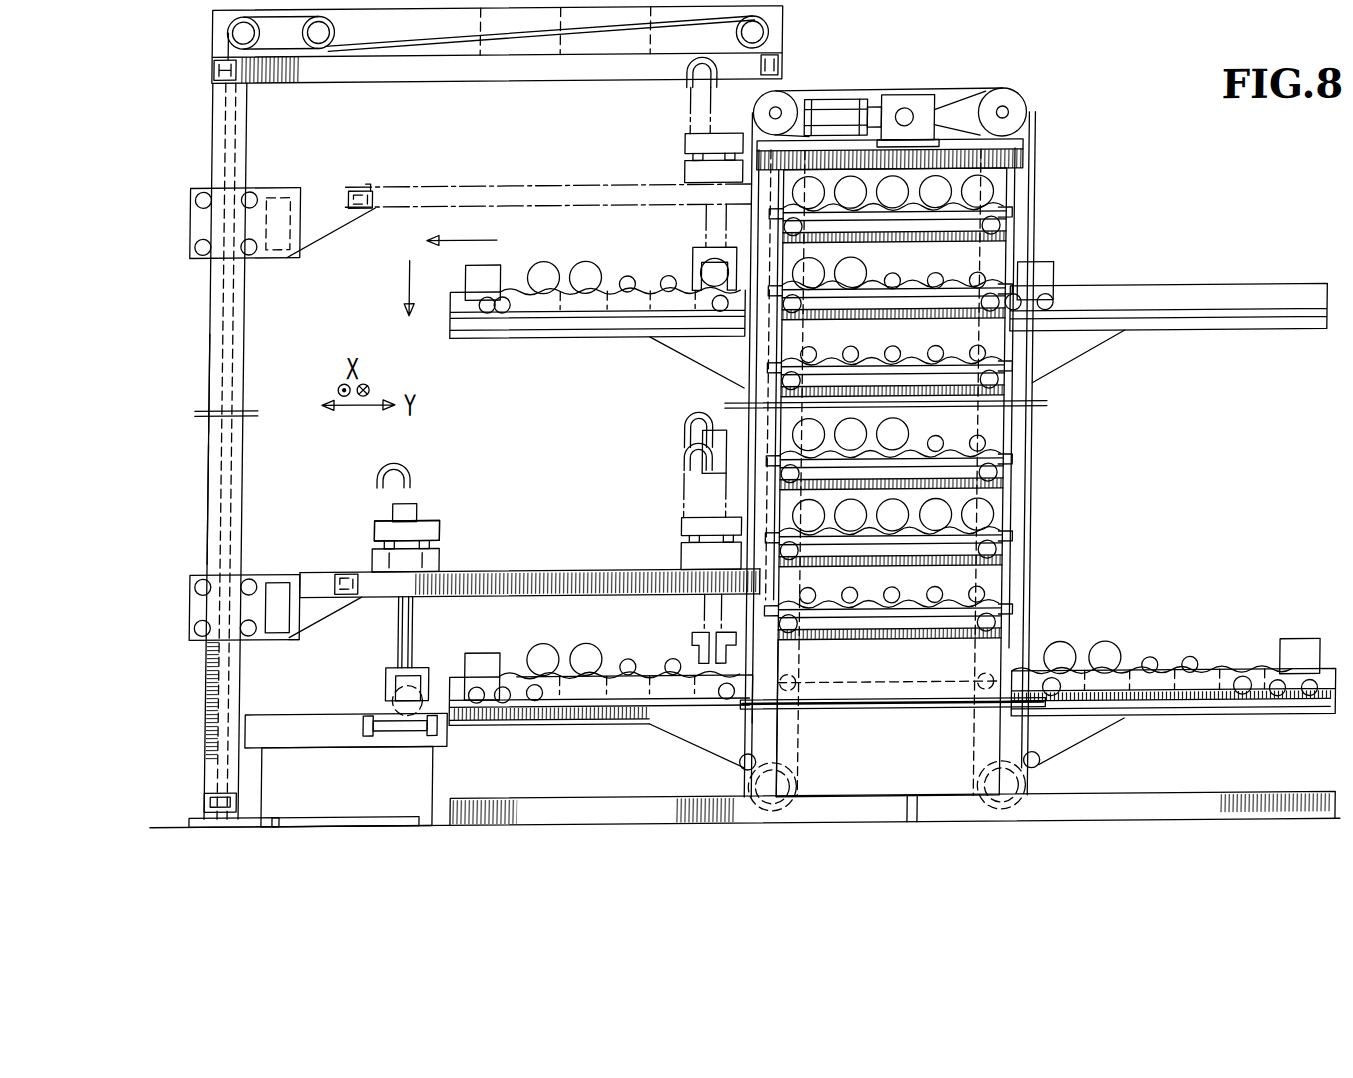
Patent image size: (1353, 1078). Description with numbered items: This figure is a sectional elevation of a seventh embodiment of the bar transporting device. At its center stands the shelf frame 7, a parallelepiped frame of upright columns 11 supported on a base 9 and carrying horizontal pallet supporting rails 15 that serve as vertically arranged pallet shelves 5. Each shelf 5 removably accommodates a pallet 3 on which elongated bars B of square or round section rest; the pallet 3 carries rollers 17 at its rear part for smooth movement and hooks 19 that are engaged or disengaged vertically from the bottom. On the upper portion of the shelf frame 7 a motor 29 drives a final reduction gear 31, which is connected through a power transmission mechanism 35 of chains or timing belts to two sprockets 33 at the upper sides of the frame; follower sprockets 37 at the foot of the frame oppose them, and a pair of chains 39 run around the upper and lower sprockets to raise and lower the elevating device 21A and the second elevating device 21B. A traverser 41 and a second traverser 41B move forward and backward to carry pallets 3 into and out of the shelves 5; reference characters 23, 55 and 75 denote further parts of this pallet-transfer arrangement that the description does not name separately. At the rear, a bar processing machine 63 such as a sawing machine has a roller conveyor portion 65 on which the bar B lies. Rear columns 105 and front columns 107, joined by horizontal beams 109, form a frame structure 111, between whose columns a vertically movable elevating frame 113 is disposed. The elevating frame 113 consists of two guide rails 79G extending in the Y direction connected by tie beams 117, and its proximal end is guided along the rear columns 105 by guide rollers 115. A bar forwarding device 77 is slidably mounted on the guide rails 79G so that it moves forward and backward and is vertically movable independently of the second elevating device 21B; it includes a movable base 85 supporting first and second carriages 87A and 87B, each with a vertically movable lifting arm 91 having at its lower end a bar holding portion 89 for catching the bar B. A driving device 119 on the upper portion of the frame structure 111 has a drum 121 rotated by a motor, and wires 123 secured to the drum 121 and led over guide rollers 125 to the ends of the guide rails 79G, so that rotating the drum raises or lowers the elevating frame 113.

The pallet 3 is at (583, 303).
The pallet shelf 5 is at (1034, 522).
The shelf frame 7 is at (1045, 495).
The base 9 is at (934, 810).
The upright column 11 is at (786, 730).
The pallet supporting rail 15 is at (894, 312).
The roller 17 is at (1034, 552).
The hook 19 is at (1012, 208).
The right conveyor 21A is at (1098, 357).
The second elevating device 21B is at (683, 353).
The sprocket 23 is at (799, 684).
The motor 29 is at (834, 114).
The final reduction gear 31 is at (883, 98).
The sprocket 33 is at (750, 92).
The power transmission mechanism 35 is at (792, 102).
The follower sprocket 37 is at (812, 783).
The chain 39 is at (1030, 145).
The traverser 41 is at (1067, 272).
The second traverser 41B is at (490, 268).
The support shaft 55 is at (853, 701).
The bar processing machine 63 is at (326, 792).
The roller conveyor portion 65 is at (356, 718).
The shelf 75 is at (893, 709).
The bar forwarding device 77 is at (681, 170).
The guide rail 79G is at (576, 569).
The movable base 85 is at (441, 551).
The first carriage 87A is at (441, 523).
The second carriage 87B is at (406, 530).
The bar holding portion 89 is at (393, 677).
The lifting arm 91 is at (399, 630).
The rear column 105 is at (245, 449).
The front column 107 is at (778, 92).
The horizontal beam 109 is at (243, 88).
The frame structure 111 is at (245, 360).
The elevating frame 113 is at (300, 240).
The guide roller 115 is at (202, 636).
The tie beam 117 is at (330, 594).
The driving device 119 is at (799, 24).
The drum 121 is at (330, 30).
The chain or wire 123 is at (306, 46).
The guide roller 125 is at (236, 69).
The bar B is at (630, 276).